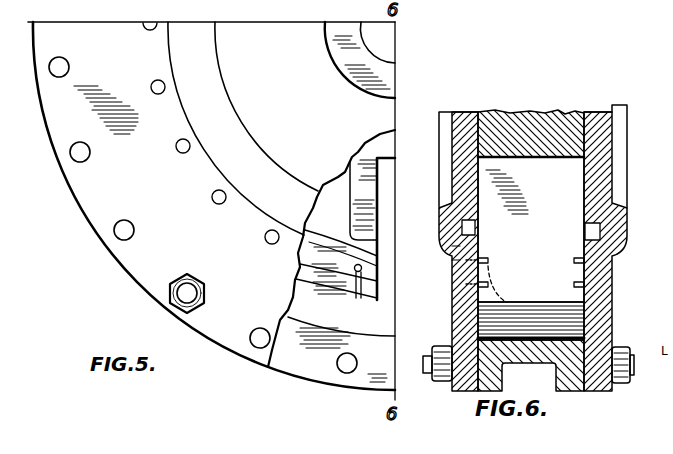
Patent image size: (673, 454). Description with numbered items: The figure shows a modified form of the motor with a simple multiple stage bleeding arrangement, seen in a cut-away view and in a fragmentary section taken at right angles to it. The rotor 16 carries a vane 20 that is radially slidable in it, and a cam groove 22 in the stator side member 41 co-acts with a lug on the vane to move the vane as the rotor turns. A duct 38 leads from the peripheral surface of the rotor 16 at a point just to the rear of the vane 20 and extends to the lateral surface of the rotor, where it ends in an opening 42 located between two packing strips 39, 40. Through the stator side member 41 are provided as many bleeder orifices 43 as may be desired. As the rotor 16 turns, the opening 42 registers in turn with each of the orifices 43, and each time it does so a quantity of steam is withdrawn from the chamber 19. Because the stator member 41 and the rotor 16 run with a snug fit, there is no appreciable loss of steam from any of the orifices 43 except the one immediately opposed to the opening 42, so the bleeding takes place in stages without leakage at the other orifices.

In FIG. 6, the rotor 16 is at (498, 113).
In FIG. 5, the chamber 19 is at (360, 323).
In FIG. 6, the chamber 19 is at (570, 320).
In FIG. 6, the vane 20 is at (570, 193).
In FIG. 6, the cam groove 22 is at (600, 232).
In FIG. 5, the duct 38 is at (358, 298).
In FIG. 6, the duct 38 is at (496, 267).
In FIG. 5, the packing strip 39 is at (378, 255).
In FIG. 6, the packing strip 39 is at (452, 250).
In FIG. 5, the packing strip 40 is at (377, 287).
In FIG. 6, the packing strip 40 is at (452, 288).
In FIG. 5, the stator side member 41 is at (243, 128).
In FIG. 6, the stator side member 41 is at (457, 157).
In FIG. 5, the opening 42 is at (362, 268).
In FIG. 6, the opening 42 is at (525, 260).
In FIG. 5, the bleeder orifice 43 is at (220, 204).
In FIG. 6, the bleeder orifice 43 is at (452, 262).